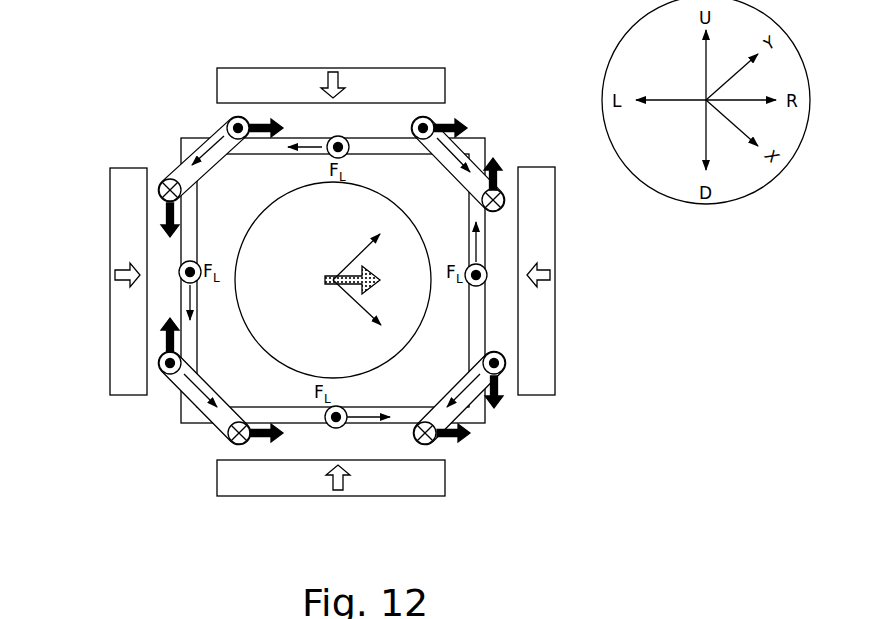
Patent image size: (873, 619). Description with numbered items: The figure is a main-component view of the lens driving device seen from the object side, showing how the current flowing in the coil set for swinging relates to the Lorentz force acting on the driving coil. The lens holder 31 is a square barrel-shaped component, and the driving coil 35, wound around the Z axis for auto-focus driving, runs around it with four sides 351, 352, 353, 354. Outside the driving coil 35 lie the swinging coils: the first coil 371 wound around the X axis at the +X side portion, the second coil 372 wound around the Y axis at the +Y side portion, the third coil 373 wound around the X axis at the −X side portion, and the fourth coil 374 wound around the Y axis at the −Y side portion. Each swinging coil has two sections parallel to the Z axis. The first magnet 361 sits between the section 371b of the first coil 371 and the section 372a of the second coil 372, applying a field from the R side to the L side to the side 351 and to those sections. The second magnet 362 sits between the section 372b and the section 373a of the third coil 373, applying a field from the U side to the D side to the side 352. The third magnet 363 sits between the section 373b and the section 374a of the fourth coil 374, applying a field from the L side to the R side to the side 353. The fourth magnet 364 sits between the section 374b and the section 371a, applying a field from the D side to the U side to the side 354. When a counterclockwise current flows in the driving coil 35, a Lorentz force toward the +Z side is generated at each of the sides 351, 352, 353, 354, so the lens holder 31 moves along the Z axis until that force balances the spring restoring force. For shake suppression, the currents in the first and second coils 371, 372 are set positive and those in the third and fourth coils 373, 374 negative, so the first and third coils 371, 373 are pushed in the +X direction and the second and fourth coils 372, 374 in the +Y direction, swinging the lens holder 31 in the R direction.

The lens holder 31 is at (460, 306).
The driving coil 35 is at (485, 250).
The side of the driving coil 351 is at (489, 232).
The side of the driving coil 352 is at (358, 136).
The side of the driving coil 353 is at (180, 267).
The side of the driving coil 354 is at (374, 426).
The first magnet 361 is at (555, 330).
The second magnet 362 is at (272, 67).
The third magnet 363 is at (116, 330).
The fourth magnet 364 is at (293, 497).
The first coil 371 is at (480, 422).
The section of the first coil 371a is at (430, 442).
The section of the first coil 371b is at (498, 373).
The second coil 372 is at (482, 138).
The section of the second coil 372a is at (500, 193).
The section of the second coil 372b is at (428, 121).
The third coil 373 is at (193, 147).
The section of the third coil 373a is at (231, 122).
The section of the third coil 373b is at (164, 186).
The fourth coil 374 is at (182, 412).
The section of the fourth coil 374a is at (166, 373).
The section of the fourth coil 374b is at (235, 441).